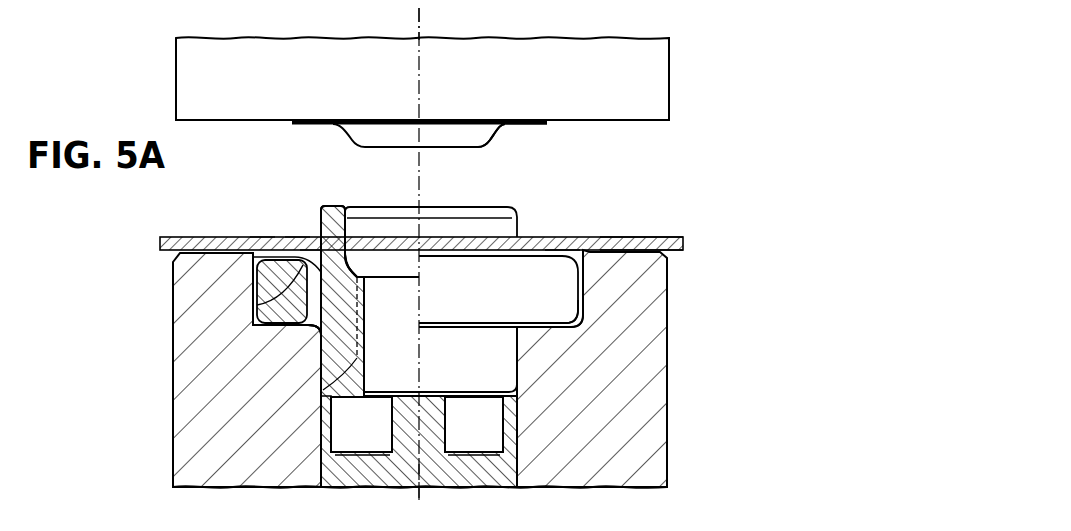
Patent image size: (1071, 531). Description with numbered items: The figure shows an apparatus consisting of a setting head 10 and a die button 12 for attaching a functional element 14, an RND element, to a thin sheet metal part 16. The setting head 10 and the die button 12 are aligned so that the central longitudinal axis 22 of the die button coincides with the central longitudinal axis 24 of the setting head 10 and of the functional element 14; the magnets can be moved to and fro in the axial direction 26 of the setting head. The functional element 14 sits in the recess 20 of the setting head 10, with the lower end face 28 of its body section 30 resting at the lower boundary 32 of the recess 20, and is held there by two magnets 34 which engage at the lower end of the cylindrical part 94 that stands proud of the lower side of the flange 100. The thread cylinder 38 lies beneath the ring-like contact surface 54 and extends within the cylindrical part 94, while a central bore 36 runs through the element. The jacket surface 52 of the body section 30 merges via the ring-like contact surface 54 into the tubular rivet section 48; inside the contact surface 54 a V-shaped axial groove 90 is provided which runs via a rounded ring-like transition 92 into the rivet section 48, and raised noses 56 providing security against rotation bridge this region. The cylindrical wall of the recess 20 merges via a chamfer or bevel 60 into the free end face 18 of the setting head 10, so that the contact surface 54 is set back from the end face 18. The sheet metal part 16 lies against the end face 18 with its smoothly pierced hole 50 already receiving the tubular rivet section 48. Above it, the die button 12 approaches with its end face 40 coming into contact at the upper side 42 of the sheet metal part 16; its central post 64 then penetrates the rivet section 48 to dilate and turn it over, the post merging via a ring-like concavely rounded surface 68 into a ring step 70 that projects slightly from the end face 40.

The setting head 10 is at (672, 373).
The die button 12 is at (669, 83).
The functional element 14 is at (527, 215).
The sheet metal part 16 is at (690, 243).
The end face of the setting head 18 is at (647, 248).
The recess 20 is at (258, 325).
The central longitudinal axis of the die button 22 is at (421, 37).
The central longitudinal axis 24 is at (423, 291).
The axial direction of the setting head 26 is at (419, 500).
The lower end face of the body section 28 is at (580, 316).
The body section 30 is at (550, 306).
The lower boundary of the recess 32 is at (532, 328).
The magnets 34 is at (365, 443).
The central bore 36 is at (375, 297).
The thread cylinder 38 is at (320, 365).
The end face of the die button 40 is at (608, 125).
The upper side of the sheet metal part 42 is at (622, 238).
The tubular rivet section 48 is at (333, 206).
The hole 50 is at (308, 250).
The jacket surface 52 is at (243, 257).
The ring-like contact surface 54 is at (262, 250).
The noses providing security against rotation 56 is at (298, 250).
The chamfer or bevel 60 is at (240, 256).
The central post of the die button 64 is at (445, 147).
The ring-like concavely rounded surface 68 is at (503, 128).
The ring step 70 is at (548, 125).
The V-shaped axial groove 90 is at (262, 298).
The rounded ring-like transition 92 is at (317, 330).
The cylindrical part 94 is at (320, 397).
The flange 100 is at (560, 249).